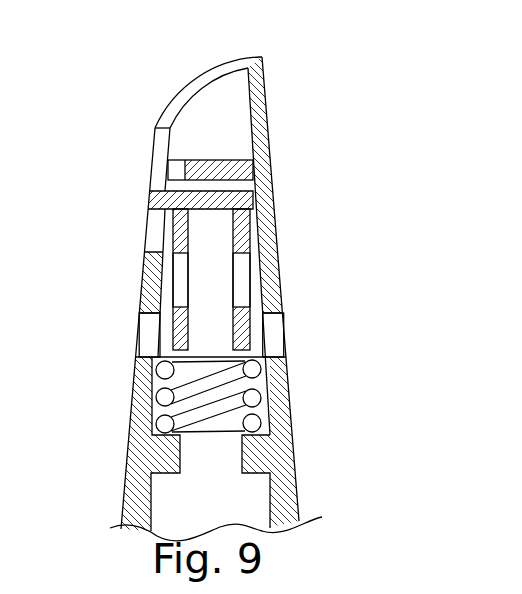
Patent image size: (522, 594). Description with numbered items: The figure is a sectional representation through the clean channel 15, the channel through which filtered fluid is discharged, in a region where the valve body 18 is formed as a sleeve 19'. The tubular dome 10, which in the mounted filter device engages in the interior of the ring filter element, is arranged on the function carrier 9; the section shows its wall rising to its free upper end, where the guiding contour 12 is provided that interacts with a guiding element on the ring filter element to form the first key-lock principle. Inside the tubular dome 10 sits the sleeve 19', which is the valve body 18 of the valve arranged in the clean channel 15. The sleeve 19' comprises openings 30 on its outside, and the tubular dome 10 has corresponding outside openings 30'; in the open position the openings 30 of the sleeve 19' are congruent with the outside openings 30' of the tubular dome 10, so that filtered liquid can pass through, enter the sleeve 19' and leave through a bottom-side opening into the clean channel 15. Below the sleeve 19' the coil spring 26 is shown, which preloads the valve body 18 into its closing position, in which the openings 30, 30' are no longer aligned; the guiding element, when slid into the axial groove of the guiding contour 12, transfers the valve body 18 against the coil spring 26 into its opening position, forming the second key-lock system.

The function carrier 9 is at (190, 59).
The guiding contour 12 is at (175, 98).
The tubular dome 10 is at (265, 126).
The sleeve 19' is at (263, 257).
The valve body 18 is at (290, 177).
The openings 30 is at (208, 280).
The outside openings 30' is at (211, 337).
The coil spring 26 is at (253, 398).
The clean channel 15 is at (252, 505).